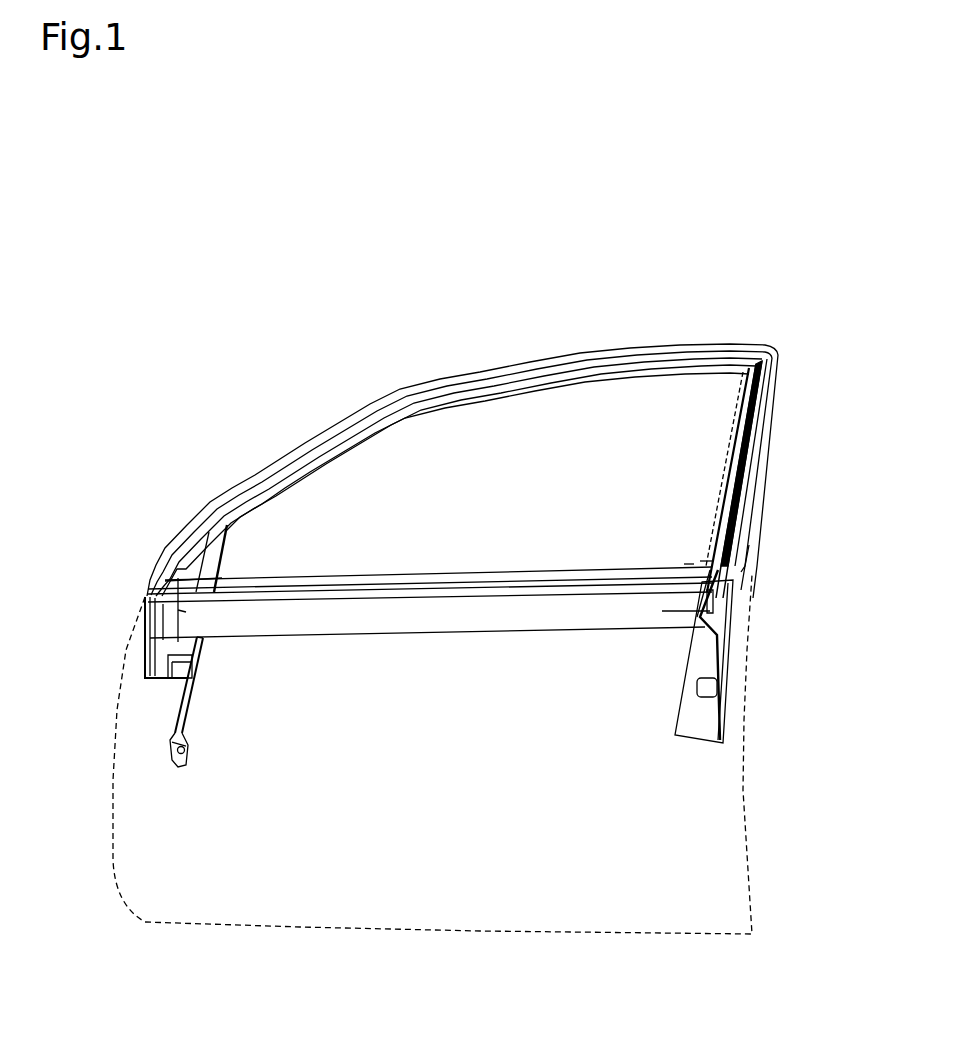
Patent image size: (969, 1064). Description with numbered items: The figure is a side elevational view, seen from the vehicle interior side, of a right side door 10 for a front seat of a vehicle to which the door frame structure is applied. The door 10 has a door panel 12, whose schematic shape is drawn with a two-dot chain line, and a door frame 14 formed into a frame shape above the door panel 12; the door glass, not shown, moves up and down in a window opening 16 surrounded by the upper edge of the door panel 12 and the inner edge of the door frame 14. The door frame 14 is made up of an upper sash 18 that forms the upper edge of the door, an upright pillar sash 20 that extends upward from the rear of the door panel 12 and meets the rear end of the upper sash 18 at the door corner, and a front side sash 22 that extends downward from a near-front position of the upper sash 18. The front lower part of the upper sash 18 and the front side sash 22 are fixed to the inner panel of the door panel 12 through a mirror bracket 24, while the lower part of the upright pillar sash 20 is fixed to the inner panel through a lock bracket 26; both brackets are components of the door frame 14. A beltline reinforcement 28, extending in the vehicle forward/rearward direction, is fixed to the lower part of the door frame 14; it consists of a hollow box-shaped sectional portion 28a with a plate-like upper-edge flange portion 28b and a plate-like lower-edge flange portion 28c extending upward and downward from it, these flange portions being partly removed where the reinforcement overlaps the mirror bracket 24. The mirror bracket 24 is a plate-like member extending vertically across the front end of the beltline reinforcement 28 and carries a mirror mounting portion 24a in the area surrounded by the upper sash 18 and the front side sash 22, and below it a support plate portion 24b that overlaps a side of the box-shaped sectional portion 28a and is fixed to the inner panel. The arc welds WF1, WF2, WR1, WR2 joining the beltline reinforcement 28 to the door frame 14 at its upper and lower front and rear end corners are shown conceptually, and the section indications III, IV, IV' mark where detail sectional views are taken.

The side door 10 is at (256, 341).
The door panel 12 is at (733, 810).
The door frame 14 is at (553, 351).
The window opening 16 is at (420, 458).
The upper sash 18 is at (479, 387).
The upright pillar sash 20 is at (777, 436).
The front side sash 22 is at (222, 549).
The mirror bracket 24 is at (178, 494).
The mirror mounting portion 24a is at (190, 563).
The support plate portion 24b is at (146, 586).
The lock bracket 26 is at (723, 653).
The beltline reinforcement 28 is at (412, 641).
The box-shaped sectional portion 28a is at (533, 600).
The upper-edge flange portion 28b is at (483, 576).
The lower-edge flange portion 28c is at (575, 619).
The weld WF1 is at (218, 578).
The weld WF2 is at (190, 643).
The weld WR1 is at (707, 560).
The weld WR2 is at (697, 622).
The section line III is at (182, 612).
The section line IV is at (686, 535).
The section line IV' is at (655, 648).